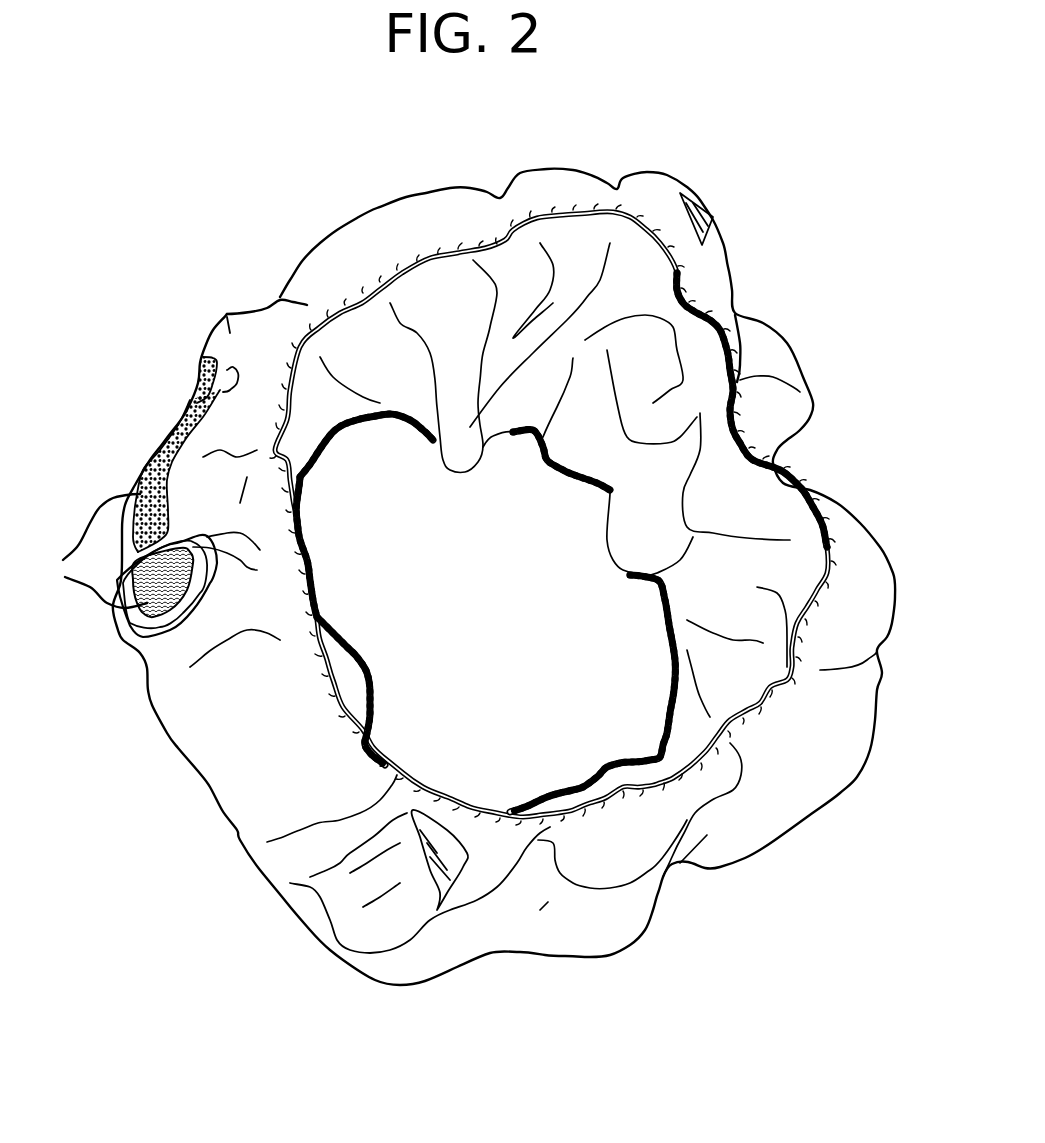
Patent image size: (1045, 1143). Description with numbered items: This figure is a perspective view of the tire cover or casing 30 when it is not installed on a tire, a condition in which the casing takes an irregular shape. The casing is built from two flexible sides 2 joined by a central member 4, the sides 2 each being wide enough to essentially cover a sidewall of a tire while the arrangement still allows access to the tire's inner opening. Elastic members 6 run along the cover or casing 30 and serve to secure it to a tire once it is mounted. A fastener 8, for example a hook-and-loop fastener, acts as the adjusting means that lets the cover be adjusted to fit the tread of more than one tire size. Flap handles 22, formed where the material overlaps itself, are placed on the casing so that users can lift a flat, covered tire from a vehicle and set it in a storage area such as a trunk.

The flexible sides 2 is at (850, 593).
The central member 4 is at (225, 315).
The elastic members 6 is at (840, 527).
The fastener 8 is at (126, 586).
The flap handles 22 is at (716, 220).
The tire cover or casing 30 is at (805, 958).